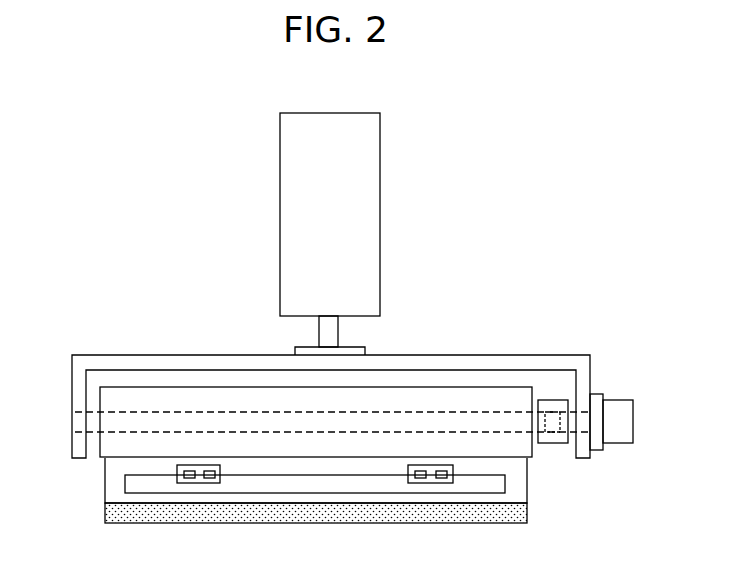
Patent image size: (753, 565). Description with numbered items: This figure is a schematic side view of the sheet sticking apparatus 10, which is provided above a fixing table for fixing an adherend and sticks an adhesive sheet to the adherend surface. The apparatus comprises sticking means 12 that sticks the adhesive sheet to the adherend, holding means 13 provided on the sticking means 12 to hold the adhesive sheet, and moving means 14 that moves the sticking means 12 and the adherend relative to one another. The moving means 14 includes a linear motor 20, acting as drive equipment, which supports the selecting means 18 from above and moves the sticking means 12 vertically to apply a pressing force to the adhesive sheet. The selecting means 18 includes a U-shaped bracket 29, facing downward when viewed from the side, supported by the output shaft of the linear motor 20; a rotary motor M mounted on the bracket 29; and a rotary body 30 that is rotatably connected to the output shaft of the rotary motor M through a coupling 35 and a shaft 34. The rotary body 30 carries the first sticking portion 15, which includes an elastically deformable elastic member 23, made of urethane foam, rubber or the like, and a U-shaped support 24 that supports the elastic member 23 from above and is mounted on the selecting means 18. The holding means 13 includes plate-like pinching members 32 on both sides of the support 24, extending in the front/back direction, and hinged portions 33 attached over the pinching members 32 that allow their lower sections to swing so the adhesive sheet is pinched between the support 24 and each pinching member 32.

The sheet sticking apparatus 10 is at (150, 198).
The sticking means 12 is at (598, 331).
The holding means 13 is at (520, 484).
The moving means 14 is at (272, 236).
The first sticking portion 15 is at (97, 521).
The selecting means 18 is at (639, 388).
The linear motor 20 is at (380, 246).
The elastic member 23 is at (133, 523).
The U-shaped support 24 is at (527, 497).
The U-shaped bracket 29 is at (413, 354).
The rotary body 30 is at (218, 387).
The pinching member 32 is at (328, 493).
The hinged portion 33 is at (197, 478).
The shaft 34 is at (467, 412).
The coupling 35 is at (551, 400).
The rotary motor M is at (633, 432).